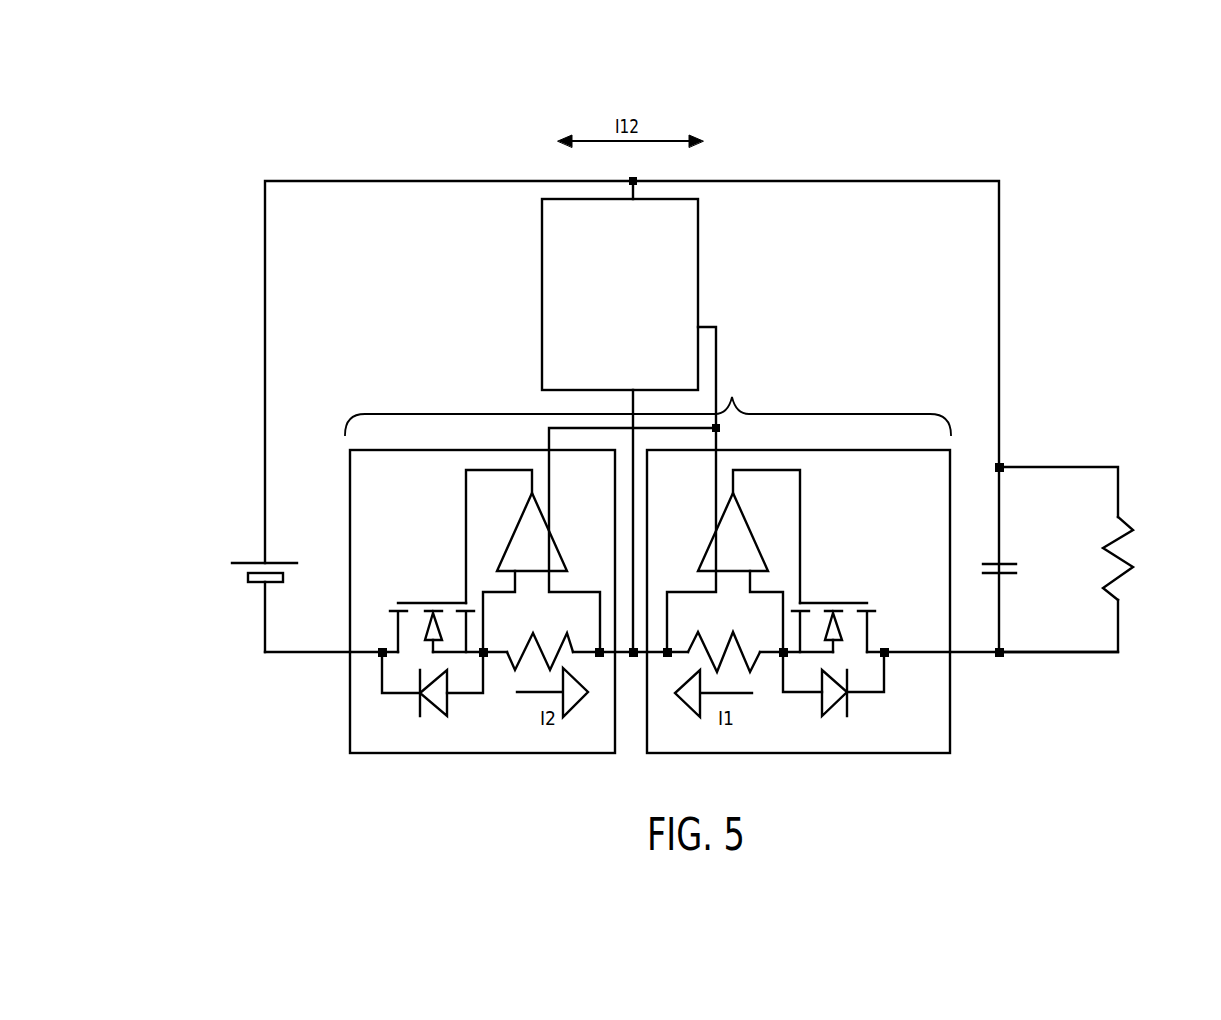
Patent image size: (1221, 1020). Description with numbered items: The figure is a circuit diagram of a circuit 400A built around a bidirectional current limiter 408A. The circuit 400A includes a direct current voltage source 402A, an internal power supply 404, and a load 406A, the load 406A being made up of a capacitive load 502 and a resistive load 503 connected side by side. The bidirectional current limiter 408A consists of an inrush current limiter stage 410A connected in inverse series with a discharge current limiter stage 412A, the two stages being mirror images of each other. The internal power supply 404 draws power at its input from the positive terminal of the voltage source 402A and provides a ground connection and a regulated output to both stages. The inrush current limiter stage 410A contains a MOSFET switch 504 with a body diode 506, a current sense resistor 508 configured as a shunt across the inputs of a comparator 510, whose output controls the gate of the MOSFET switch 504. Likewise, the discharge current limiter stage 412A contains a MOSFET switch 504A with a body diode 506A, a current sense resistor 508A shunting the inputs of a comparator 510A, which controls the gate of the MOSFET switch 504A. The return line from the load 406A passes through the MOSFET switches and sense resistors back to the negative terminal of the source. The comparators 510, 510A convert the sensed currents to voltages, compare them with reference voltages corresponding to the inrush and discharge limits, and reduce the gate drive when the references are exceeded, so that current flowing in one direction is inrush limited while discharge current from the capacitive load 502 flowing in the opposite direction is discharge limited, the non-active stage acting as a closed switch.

The circuit 400A is at (1050, 112).
The direct current (DC) voltage source 402A is at (232, 505).
The internal power supply 404 is at (542, 283).
The load 406A is at (1071, 562).
The bidirectional current limiter 408A is at (648, 404).
The inrush current limiter stage 410A is at (898, 448).
The discharge current limiter stage 412A is at (350, 461).
The capacitive load 502 is at (1010, 578).
The resistive load 503 is at (1125, 581).
The MOSFET switch 504 is at (838, 602).
The MOSFET switch 504A is at (410, 602).
The body diode 506 is at (822, 704).
The body diode 506A is at (447, 713).
The current sense resistor 508 is at (740, 663).
The current sense resistor 508A is at (567, 663).
The comparator 510 is at (715, 538).
The comparator 510A is at (511, 538).